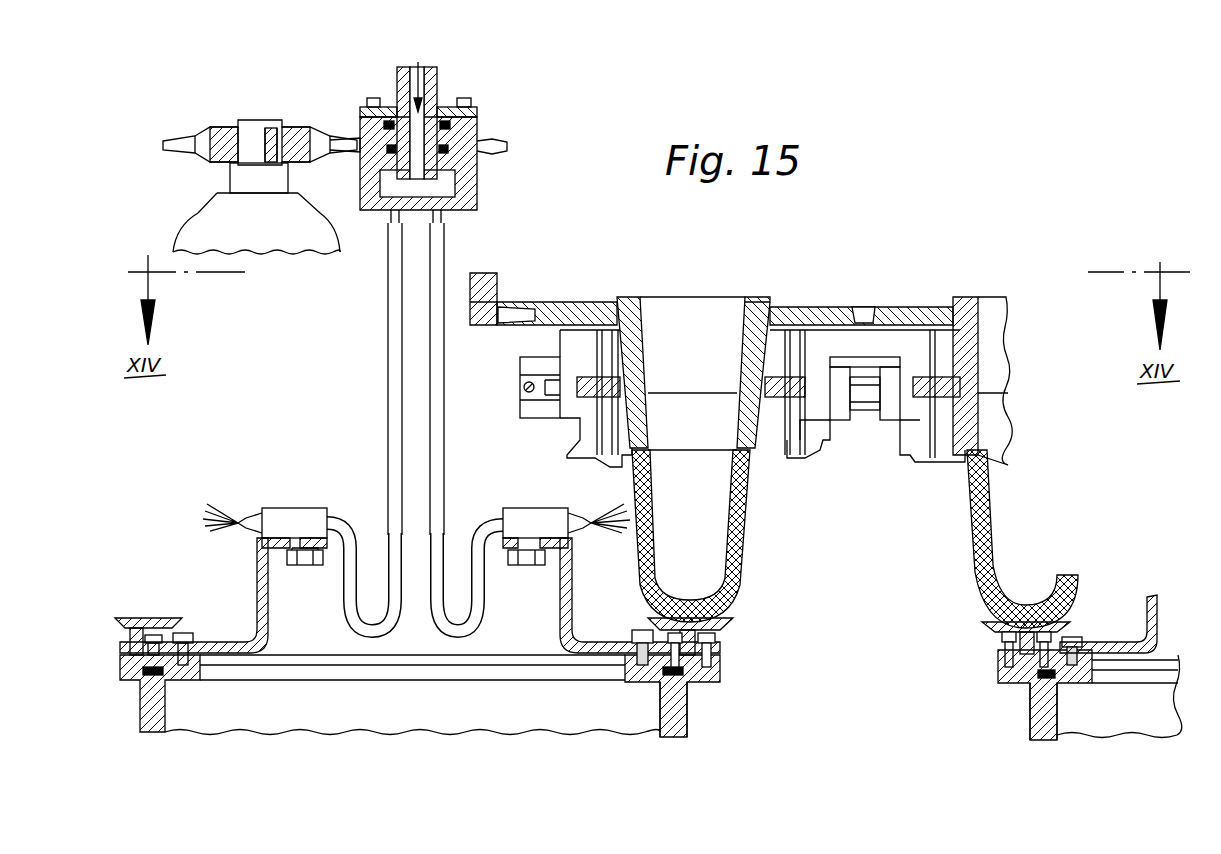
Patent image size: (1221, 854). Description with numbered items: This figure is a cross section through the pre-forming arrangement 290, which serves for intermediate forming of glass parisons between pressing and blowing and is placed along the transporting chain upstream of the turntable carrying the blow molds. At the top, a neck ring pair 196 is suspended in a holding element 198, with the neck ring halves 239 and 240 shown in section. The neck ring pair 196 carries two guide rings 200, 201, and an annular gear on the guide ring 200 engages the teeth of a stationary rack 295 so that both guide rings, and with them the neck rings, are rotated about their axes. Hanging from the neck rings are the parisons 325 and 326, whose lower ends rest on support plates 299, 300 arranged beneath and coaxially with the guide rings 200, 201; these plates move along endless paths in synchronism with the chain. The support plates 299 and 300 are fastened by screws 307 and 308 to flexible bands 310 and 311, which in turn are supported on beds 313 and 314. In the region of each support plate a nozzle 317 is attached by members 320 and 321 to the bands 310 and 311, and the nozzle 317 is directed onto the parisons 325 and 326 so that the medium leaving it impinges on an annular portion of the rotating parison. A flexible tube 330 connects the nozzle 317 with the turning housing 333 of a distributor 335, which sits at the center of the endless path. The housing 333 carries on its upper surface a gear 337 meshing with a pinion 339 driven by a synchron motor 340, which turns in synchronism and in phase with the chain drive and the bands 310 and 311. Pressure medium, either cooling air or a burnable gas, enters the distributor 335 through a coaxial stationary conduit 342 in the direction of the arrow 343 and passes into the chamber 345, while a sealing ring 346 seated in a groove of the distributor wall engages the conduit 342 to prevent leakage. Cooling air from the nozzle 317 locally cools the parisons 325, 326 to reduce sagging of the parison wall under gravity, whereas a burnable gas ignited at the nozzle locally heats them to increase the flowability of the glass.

The neck ring pair 196 is at (741, 338).
The holding element 198 is at (520, 419).
The guide ring 200 is at (601, 296).
The guide ring 201 is at (927, 298).
The neck ring half 239 is at (568, 453).
The neck ring half 240 is at (911, 463).
The pre-forming arrangement 290 is at (280, 426).
The stationary rack 295 is at (498, 300).
The support plate 299 is at (140, 618).
The support plate 300 is at (982, 627).
The screw 307 is at (716, 637).
The screw 308 is at (1000, 644).
The flexible band 310 is at (719, 683).
The flexible band 311 is at (998, 668).
The bed 313 is at (688, 710).
The bed 314 is at (1030, 717).
The nozzle 317 is at (293, 506).
The member 320 is at (270, 603).
The member 321 is at (1147, 620).
The parison 325 is at (743, 546).
The parison 326 is at (975, 548).
The flexible tube 330 is at (460, 636).
The turning housing 333 is at (478, 190).
The distributor 335 is at (460, 154).
The gear 337 is at (500, 149).
The pinion 339 is at (205, 122).
The synchron motor 340 is at (200, 216).
The conduit 342 is at (397, 80).
The arrow 343 is at (437, 80).
The chamber 345 is at (373, 210).
The sealing ring 346 is at (386, 149).